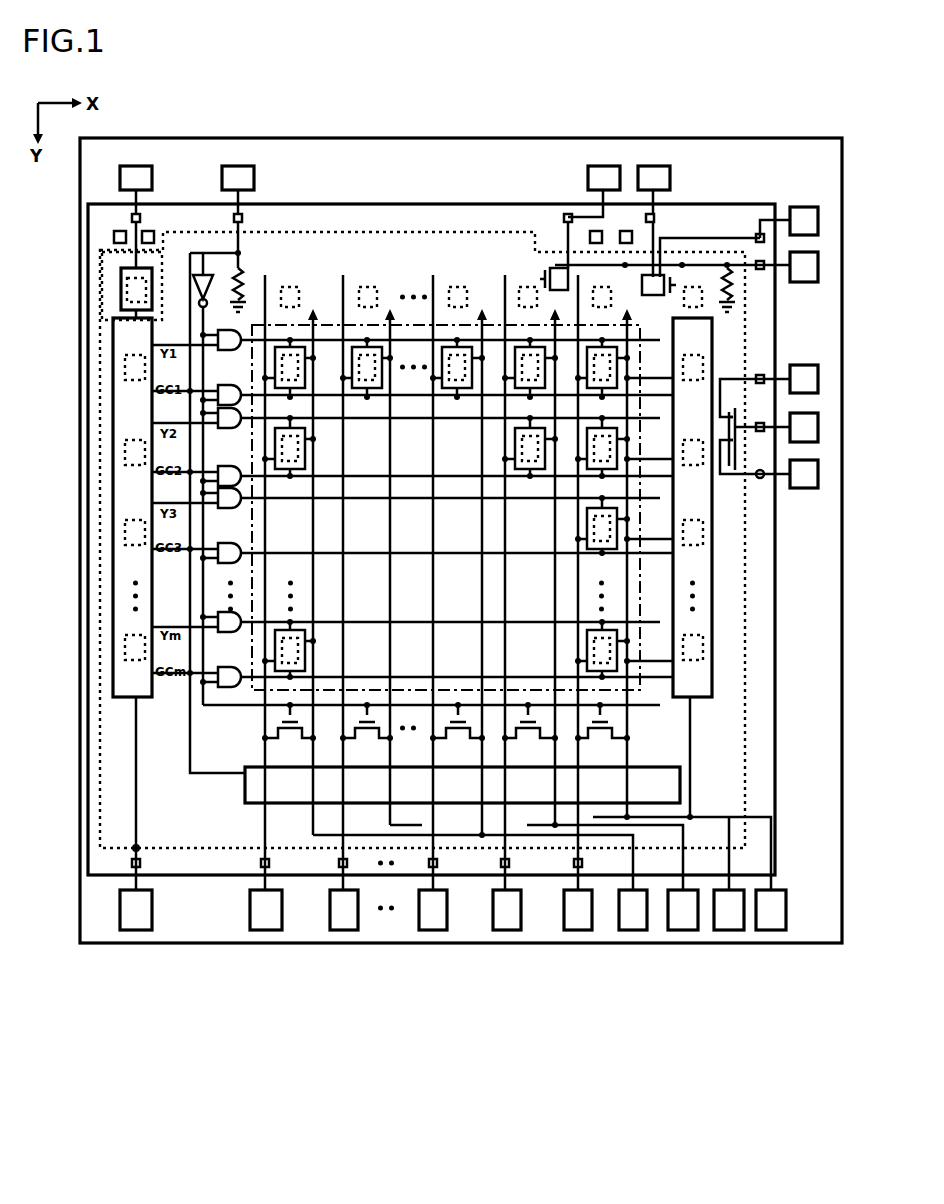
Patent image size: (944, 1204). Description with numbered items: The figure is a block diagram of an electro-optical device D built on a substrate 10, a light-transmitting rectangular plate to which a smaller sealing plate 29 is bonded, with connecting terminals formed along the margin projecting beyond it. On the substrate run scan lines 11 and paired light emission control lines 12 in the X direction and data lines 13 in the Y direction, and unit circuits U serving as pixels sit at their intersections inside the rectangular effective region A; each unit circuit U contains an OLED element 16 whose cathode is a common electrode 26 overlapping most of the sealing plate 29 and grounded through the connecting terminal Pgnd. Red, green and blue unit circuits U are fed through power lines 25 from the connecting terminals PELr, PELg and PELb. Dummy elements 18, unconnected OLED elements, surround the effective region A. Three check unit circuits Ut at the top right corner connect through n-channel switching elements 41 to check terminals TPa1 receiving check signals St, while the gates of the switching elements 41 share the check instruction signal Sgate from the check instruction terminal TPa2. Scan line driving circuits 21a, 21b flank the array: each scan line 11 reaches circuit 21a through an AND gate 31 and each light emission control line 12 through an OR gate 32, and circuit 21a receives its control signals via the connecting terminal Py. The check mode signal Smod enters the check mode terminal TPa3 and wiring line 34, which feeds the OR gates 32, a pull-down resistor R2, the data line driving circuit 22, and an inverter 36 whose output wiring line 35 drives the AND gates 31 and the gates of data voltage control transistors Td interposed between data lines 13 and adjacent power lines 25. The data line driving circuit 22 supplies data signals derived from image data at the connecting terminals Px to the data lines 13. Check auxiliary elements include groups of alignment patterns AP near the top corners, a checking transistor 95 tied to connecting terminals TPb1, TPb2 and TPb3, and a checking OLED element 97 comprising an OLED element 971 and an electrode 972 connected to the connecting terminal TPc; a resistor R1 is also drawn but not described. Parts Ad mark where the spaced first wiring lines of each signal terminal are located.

The substrate 10 is at (775, 138).
The checking OLED element 97 is at (118, 270).
The OLED element 971 is at (100, 270).
The electrode 972 is at (125, 290).
The inverter 36 is at (185, 270).
The dummy elements 18 is at (170, 268).
The data lines 13 is at (433, 280).
The scan lines 11 is at (570, 618).
The switching elements 41 is at (710, 232).
The light emission control lines 12 is at (505, 440).
The OLED elements 16 is at (512, 520).
The power lines 25 is at (540, 655).
The AND gate 31 is at (230, 352).
The OR gate 32 is at (228, 715).
The wiring line 34 is at (190, 775).
The data line driving circuit 22 is at (245, 785).
The wiring line 35 is at (233, 720).
The scan line driving circuit 21a is at (148, 700).
The scan line driving circuit 21b is at (700, 700).
The common electrode 26 is at (745, 705).
The sealing plate 29 is at (820, 943).
The checking transistor 95 is at (728, 470).
The resistor R1 is at (734, 290).
The pull-down resistor R2 is at (245, 280).
The data voltage control transistors Td is at (446, 734).
The unit circuits U is at (380, 405).
The check unit circuits Ut is at (555, 500).
The effective region A is at (640, 690).
The electro-optical device D is at (205, 955).
The groups of alignment patterns AP is at (630, 235).
The part Ad is at (235, 888).
The connecting terminal TPc is at (140, 165).
The check terminals TPa1 is at (812, 195).
The check instruction terminal TPa2 is at (810, 282).
The check mode terminal TPa3 is at (252, 166).
The connecting terminal TPb1 is at (818, 379).
The connecting terminal TPb2 is at (818, 474).
The connecting terminal TPb3 is at (818, 427).
The check signals St is at (825, 220).
The check instruction signal Sgate is at (825, 266).
The check mode signal Smod is at (238, 160).
The connecting terminal Py is at (136, 930).
The connecting terminals Px is at (598, 955).
The connecting terminal PELr is at (633, 930).
The connecting terminal PELg is at (683, 930).
The connecting terminal PELb is at (729, 930).
The connecting terminal Pgnd is at (771, 930).